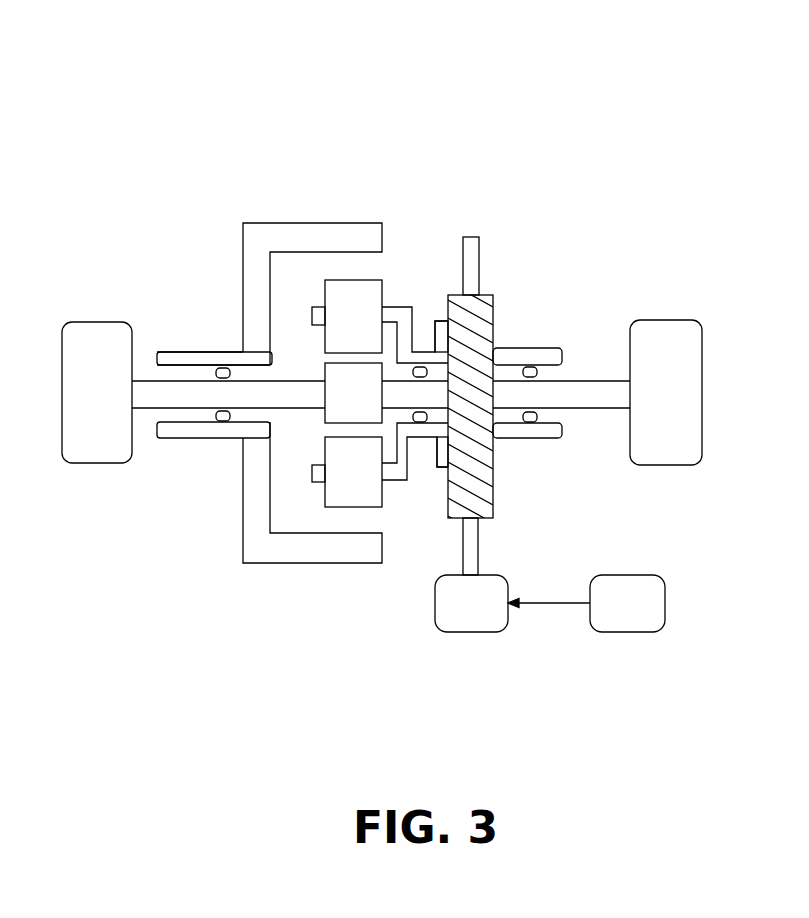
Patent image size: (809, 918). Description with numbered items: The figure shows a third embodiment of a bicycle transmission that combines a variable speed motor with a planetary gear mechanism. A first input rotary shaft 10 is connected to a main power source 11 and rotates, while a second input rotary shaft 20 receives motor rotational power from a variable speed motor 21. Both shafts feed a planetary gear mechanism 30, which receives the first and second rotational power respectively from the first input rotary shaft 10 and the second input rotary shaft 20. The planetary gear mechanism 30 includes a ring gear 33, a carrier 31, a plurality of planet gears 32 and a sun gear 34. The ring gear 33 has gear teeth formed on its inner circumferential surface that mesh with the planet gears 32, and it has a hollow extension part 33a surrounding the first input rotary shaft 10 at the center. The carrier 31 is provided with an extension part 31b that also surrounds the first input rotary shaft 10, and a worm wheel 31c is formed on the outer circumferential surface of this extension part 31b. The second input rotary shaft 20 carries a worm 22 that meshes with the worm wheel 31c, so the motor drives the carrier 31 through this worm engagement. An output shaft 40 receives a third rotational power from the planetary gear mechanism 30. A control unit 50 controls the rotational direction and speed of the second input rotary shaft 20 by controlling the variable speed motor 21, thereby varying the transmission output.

The first input rotary shaft 10 is at (183, 400).
The main power source 11 is at (93, 450).
The second input rotary shaft 20 is at (473, 253).
The variable speed motor 21 is at (465, 615).
The worm 22 is at (478, 492).
The planetary gear mechanism 30 is at (698, 145).
The carrier 31 is at (400, 472).
The extension part 31b is at (548, 348).
The worm wheel 31c is at (505, 348).
The planet gear 32 is at (358, 293).
The ring gear 33 is at (318, 232).
The hollow extension part 33a is at (230, 352).
The sun gear 34 is at (338, 395).
The output shaft 40 is at (177, 352).
The control unit 50 is at (620, 612).